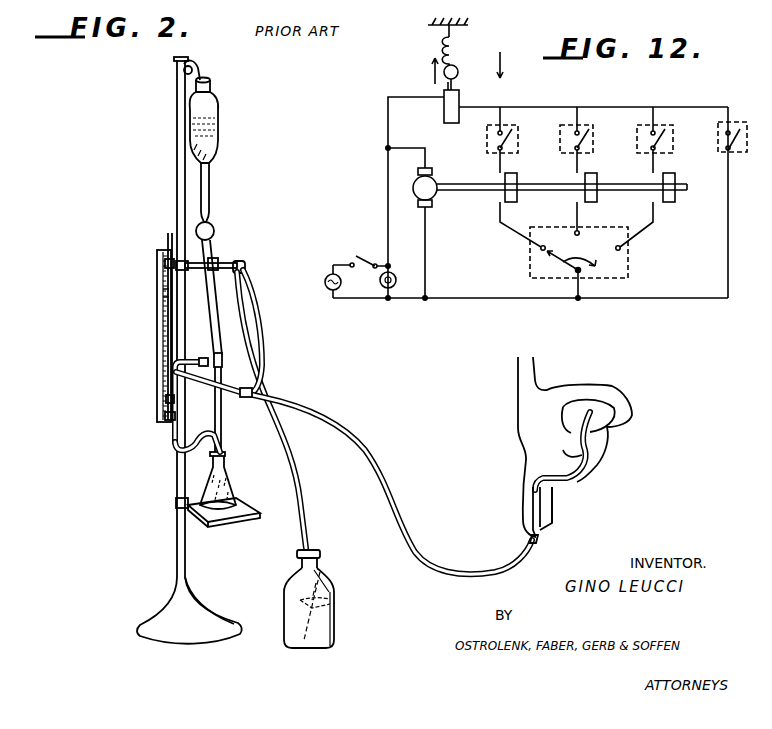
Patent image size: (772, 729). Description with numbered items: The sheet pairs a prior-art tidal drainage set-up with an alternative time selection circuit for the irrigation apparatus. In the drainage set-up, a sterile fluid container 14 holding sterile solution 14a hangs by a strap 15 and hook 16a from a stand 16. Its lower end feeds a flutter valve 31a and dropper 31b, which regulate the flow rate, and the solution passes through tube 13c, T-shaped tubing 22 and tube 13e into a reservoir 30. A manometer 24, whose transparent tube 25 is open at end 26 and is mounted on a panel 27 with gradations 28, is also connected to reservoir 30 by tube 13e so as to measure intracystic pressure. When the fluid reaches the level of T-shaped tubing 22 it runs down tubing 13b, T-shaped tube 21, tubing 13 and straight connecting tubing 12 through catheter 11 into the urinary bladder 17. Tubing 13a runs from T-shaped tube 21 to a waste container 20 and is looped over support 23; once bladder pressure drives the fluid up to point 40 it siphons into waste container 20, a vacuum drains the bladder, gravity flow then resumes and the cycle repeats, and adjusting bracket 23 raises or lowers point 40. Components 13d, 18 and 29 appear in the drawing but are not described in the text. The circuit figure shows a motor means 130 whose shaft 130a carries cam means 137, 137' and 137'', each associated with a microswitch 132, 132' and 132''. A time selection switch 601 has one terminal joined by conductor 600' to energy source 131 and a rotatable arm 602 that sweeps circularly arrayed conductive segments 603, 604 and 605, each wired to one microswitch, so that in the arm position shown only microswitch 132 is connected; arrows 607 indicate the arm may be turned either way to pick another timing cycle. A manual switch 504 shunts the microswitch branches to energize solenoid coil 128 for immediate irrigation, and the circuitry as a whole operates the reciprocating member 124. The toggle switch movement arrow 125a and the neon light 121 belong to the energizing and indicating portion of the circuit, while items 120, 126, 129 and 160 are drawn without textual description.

In FIG. 2, the catheter 11 is at (532, 504).
In FIG. 2, the straight connecting tubing 12 is at (530, 540).
In FIG. 2, the tubing 13 is at (333, 424).
In FIG. 2, the tubing 13a is at (263, 319).
In FIG. 2, the tubing 13b is at (202, 392).
In FIG. 2, the tube 13c is at (207, 333).
In FIG. 2, the tube clamp 13d is at (164, 444).
In FIG. 2, the tube 13e is at (223, 446).
In FIG. 2, the sterile fluid container 14 is at (218, 107).
In FIG. 2, the sterile solution 14a is at (218, 131).
In FIG. 2, the strap 15 is at (195, 73).
In FIG. 2, the stand 16 is at (207, 614).
In FIG. 2, the hook 16a is at (188, 65).
In FIG. 2, the urinary bladder 17 is at (600, 412).
In FIG. 2, the nozzle housing 18 is at (555, 505).
In FIG. 2, the waste container 20 is at (333, 600).
In FIG. 2, the T-shaped tube 21 is at (250, 397).
In FIG. 2, the T-shaped tubing 22 is at (222, 360).
In FIG. 2, the support 23 is at (222, 263).
In FIG. 2, the manometer 24 is at (154, 375).
In FIG. 2, the transparent tube 25 is at (160, 330).
In FIG. 2, the end 26 is at (165, 238).
In FIG. 2, the panel 27 is at (163, 264).
In FIG. 2, the gradations 28 is at (162, 297).
In FIG. 2, the shelf 29 is at (232, 524).
In FIG. 2, the reservoir 30 is at (230, 485).
In FIG. 2, the flutter valve 31a is at (212, 187).
In FIG. 2, the dropper 31b is at (214, 228).
In FIG. 2, the point of tubing 13a 40 is at (246, 267).
In FIG. 12, the power plug 120 is at (432, 29).
In FIG. 12, the neon light 121 is at (400, 274).
In FIG. 12, the reciprocating member 124 is at (459, 73).
In FIG. 12, the arrow 125a is at (372, 252).
In FIG. 12, the lead 126 is at (443, 85).
In FIG. 12, the solenoid coil 128 is at (459, 100).
In FIG. 12, the coil 129 is at (455, 47).
In FIG. 12, the motor means 130 is at (418, 202).
In FIG. 12, the shaft 130a is at (521, 183).
In FIG. 12, the power source 131 is at (341, 284).
In FIG. 12, the microswitch 132 is at (520, 139).
In FIG. 12, the microswitch 132' is at (595, 139).
In FIG. 12, the microswitch 132'' is at (674, 139).
In FIG. 12, the cam means 137 is at (535, 192).
In FIG. 12, the cam means 137' is at (614, 197).
In FIG. 12, the cam means 137'' is at (694, 192).
In FIG. 12, the current direction arrows 160 is at (432, 72).
In FIG. 12, the manual switch 504 is at (741, 104).
In FIG. 12, the conductor 600' is at (613, 272).
In FIG. 12, the time selection switch 601 is at (530, 268).
In FIG. 12, the rotatable arm 602 is at (550, 246).
In FIG. 12, the conductive segment 603 is at (517, 224).
In FIG. 12, the conductive segment 604 is at (580, 234).
In FIG. 12, the conductive segment 605 is at (647, 228).
In FIG. 12, the arrows 607 is at (608, 253).